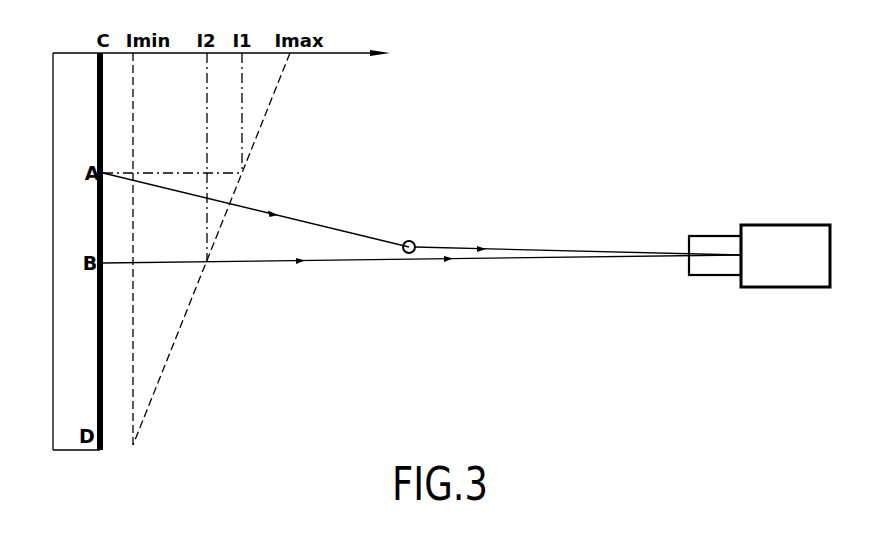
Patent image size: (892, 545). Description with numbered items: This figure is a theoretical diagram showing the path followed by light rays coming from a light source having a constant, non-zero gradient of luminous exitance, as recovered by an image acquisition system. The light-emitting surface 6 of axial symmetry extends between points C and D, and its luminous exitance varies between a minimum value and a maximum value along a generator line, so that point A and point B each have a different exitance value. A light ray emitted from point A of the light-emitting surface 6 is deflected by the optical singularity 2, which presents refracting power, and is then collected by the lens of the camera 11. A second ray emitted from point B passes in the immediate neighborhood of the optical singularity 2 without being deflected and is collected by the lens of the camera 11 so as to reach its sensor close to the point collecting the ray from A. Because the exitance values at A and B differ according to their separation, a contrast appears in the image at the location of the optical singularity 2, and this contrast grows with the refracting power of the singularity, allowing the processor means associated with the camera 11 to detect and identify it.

The optical singularity 2 is at (409, 241).
The light-emitting surface 6 is at (66, 450).
The camera 11 is at (745, 204).